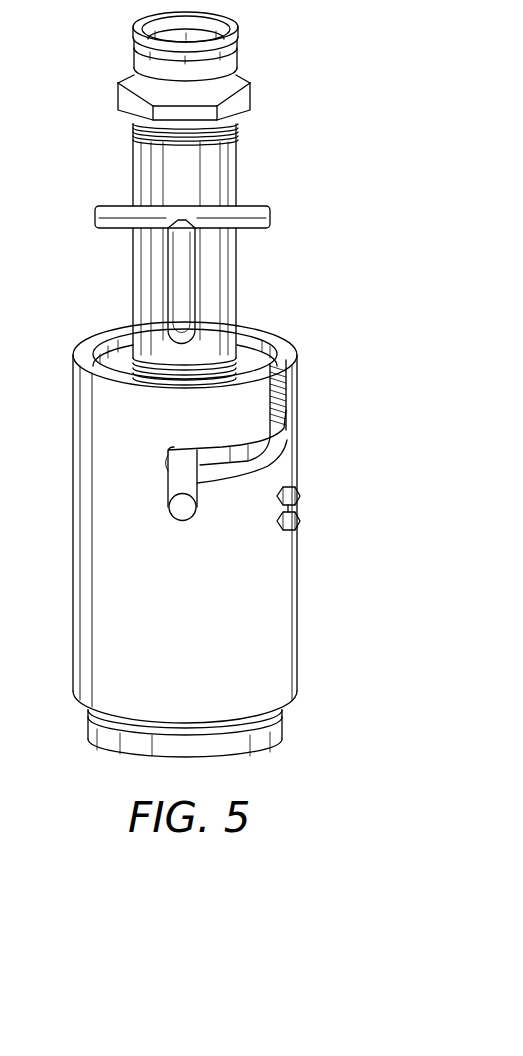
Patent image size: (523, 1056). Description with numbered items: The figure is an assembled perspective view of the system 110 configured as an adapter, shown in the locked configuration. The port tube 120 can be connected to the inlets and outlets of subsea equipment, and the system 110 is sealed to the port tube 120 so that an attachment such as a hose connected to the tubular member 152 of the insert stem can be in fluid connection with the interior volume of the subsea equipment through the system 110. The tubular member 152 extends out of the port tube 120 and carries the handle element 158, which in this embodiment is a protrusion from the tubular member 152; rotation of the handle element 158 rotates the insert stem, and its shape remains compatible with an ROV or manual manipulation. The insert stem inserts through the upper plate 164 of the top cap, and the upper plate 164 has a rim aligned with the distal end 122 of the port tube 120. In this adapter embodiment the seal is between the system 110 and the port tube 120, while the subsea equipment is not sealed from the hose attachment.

The system 110 is at (96, 77).
The tubular member 152 is at (143, 175).
The handle element 158 is at (262, 228).
The upper plate 164 is at (128, 363).
The distal end 122 is at (272, 337).
The port tube 120 is at (80, 590).